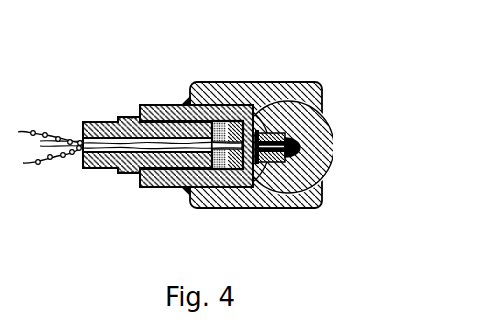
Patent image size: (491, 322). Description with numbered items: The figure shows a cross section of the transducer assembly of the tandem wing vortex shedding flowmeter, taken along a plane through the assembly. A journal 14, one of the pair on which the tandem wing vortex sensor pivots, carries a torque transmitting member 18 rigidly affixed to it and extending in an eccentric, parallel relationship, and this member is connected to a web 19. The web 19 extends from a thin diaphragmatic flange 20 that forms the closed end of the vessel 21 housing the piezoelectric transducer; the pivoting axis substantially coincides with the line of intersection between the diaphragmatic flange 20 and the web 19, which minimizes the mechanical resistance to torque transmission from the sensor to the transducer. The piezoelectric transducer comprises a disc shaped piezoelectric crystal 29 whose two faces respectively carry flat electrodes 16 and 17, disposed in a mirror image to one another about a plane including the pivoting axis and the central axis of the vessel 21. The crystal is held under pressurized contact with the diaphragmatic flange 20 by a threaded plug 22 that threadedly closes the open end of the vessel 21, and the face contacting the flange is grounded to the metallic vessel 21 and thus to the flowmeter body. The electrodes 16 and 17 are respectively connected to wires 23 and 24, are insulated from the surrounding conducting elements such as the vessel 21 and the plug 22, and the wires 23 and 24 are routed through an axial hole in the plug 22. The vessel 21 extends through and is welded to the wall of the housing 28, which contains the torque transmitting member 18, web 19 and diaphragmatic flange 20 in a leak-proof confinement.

The journal 14 is at (262, 163).
The piezoelectric element (flat electrode) 16 is at (190, 206).
The piezoelectric element (flat electrode) 17 is at (218, 121).
The torque transmitting member 18 is at (291, 162).
The web 19 is at (283, 101).
The diaphragmatic flange 20 is at (262, 108).
The vessel 21 is at (142, 188).
The threaded plug 22 is at (131, 115).
The wire 23 is at (50, 158).
The wire 24 is at (44, 133).
The housing 28 is at (325, 90).
The piezoelectric crystal 29 is at (218, 188).